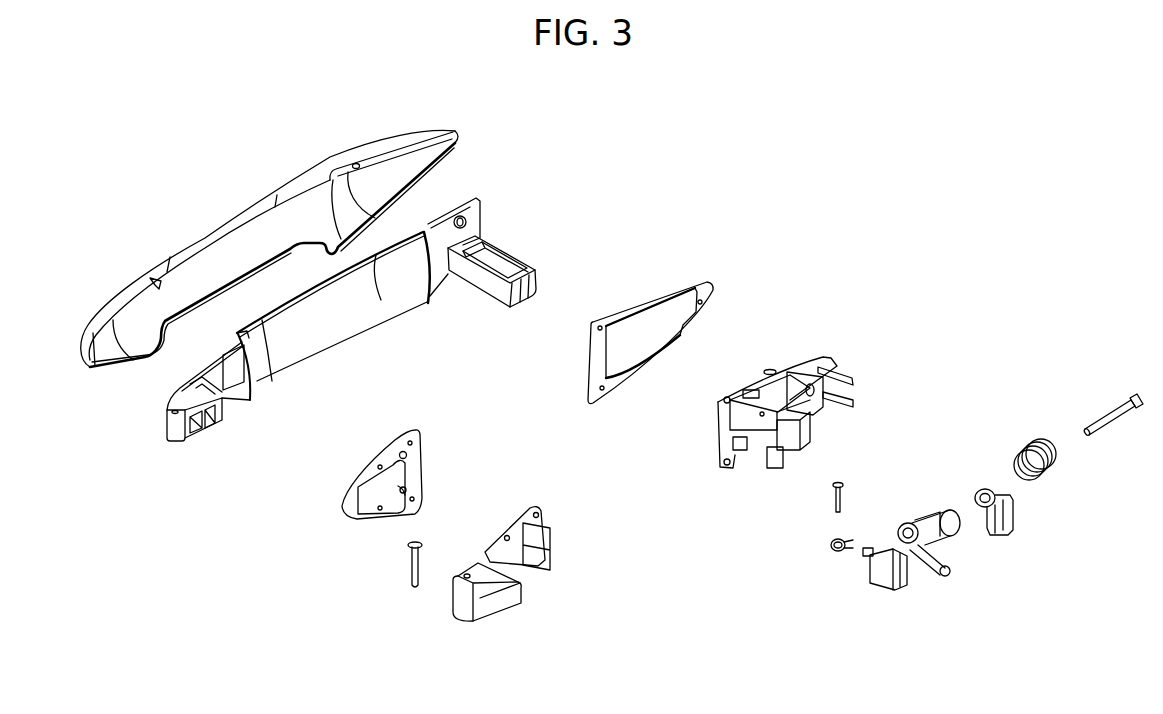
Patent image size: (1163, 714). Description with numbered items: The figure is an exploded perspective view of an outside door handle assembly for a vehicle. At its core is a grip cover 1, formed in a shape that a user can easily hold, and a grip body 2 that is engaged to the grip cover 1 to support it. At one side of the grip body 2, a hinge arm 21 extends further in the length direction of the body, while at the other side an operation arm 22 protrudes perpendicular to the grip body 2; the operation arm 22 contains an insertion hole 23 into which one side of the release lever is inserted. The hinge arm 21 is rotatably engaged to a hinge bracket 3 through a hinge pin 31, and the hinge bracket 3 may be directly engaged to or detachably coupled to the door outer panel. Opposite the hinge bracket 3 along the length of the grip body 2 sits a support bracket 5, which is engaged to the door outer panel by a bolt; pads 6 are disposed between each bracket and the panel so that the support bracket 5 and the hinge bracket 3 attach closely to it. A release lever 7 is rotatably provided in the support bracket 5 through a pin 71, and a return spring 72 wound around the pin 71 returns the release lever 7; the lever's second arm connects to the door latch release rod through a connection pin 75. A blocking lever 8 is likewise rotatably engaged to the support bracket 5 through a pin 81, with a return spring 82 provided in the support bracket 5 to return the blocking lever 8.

The grip cover 1 is at (183, 253).
The grip body 2 is at (336, 316).
The hinge arm 21 is at (167, 433).
The operation arm 22 is at (506, 288).
The insertion hole 23 is at (496, 266).
The hinge bracket 3 is at (462, 602).
The hinge pin 31 is at (412, 567).
The support bracket 5 is at (843, 366).
The pad 6 is at (712, 285).
The release lever 7 is at (953, 570).
The pin 71 is at (1103, 420).
The return spring 72 is at (1030, 445).
The connection pin 75 is at (1017, 523).
The blocking lever 8 is at (890, 573).
The pin 81 is at (835, 500).
The return spring 82 is at (832, 555).